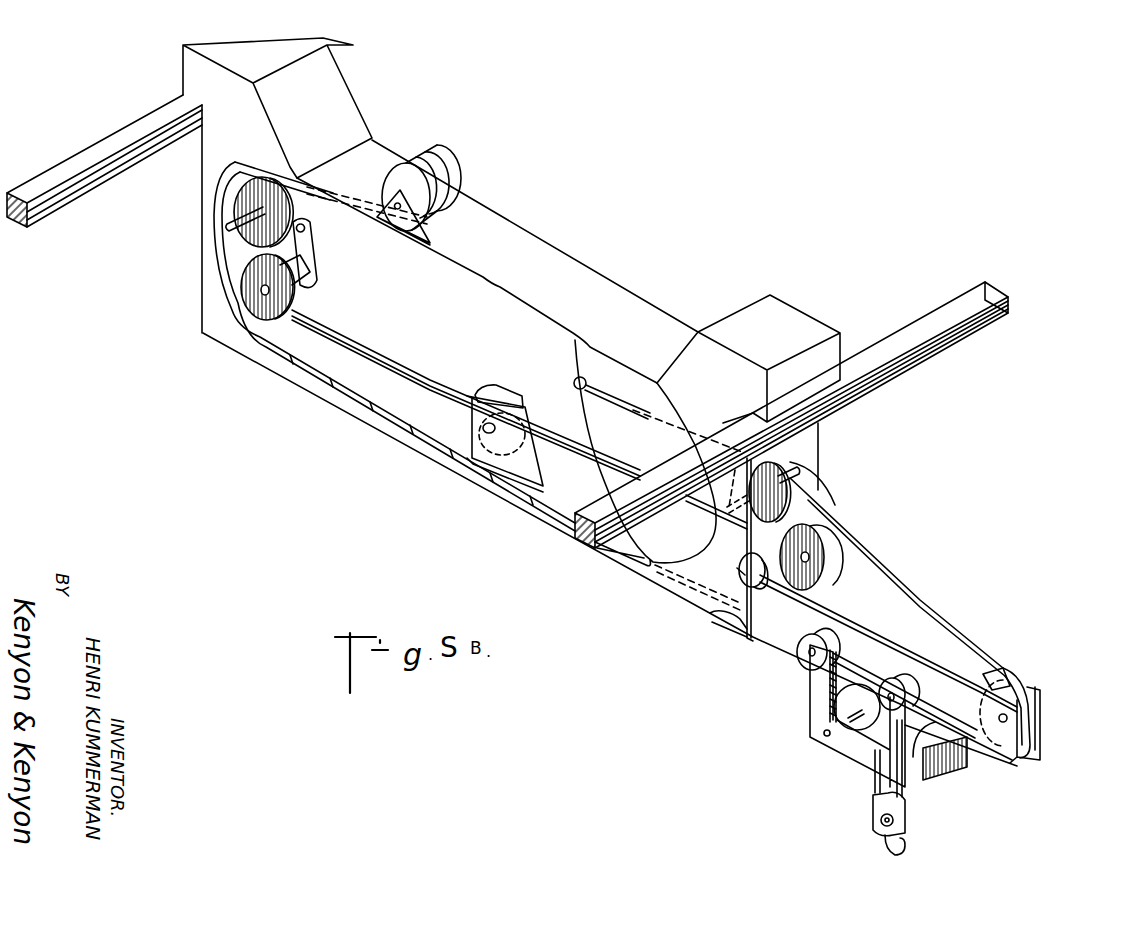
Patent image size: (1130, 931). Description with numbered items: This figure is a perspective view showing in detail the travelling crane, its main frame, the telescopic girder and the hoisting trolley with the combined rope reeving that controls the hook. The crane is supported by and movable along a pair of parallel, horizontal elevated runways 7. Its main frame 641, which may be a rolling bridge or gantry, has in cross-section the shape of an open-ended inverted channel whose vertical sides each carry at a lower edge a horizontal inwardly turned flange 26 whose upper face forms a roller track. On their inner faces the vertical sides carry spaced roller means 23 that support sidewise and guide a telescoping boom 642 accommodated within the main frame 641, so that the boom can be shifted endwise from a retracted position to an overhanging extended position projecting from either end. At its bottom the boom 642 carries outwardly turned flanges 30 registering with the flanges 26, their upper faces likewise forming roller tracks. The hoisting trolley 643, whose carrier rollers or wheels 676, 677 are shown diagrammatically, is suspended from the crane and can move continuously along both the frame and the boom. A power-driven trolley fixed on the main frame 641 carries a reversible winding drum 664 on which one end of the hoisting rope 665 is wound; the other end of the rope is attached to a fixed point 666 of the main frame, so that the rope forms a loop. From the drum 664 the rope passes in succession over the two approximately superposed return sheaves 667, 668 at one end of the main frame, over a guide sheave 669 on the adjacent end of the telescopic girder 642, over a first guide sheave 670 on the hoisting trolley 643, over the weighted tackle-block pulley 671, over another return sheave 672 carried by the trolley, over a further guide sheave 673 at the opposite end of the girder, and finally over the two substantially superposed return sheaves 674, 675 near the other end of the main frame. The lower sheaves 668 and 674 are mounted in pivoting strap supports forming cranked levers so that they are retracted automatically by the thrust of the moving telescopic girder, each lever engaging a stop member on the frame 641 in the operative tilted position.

The elevated runways 7 is at (55, 171).
The main frame 641 is at (374, 147).
The winding drum 664 is at (457, 191).
The return sheave 667 is at (237, 192).
The return sheave 668 is at (253, 273).
The hoisting rope 665 is at (388, 396).
The inwardly turned flange 26 is at (377, 353).
The guide sheave 669 is at (507, 365).
The fixed point 666 is at (579, 377).
The return sheave 675 is at (768, 477).
The return sheave 674 is at (853, 551).
The telescoping boom 642 is at (935, 628).
The roller means 23 is at (760, 590).
The carrier roller 676 is at (805, 659).
The carrier roller 677 is at (907, 677).
The first guide sheave 670 is at (840, 707).
The hoisting trolley 643 is at (853, 752).
The return sheave 672 is at (925, 770).
The weighted tackle-block pulley 671 is at (873, 811).
The guide sheave 673 is at (1030, 718).
The outwardly turned flange 30 is at (1012, 763).